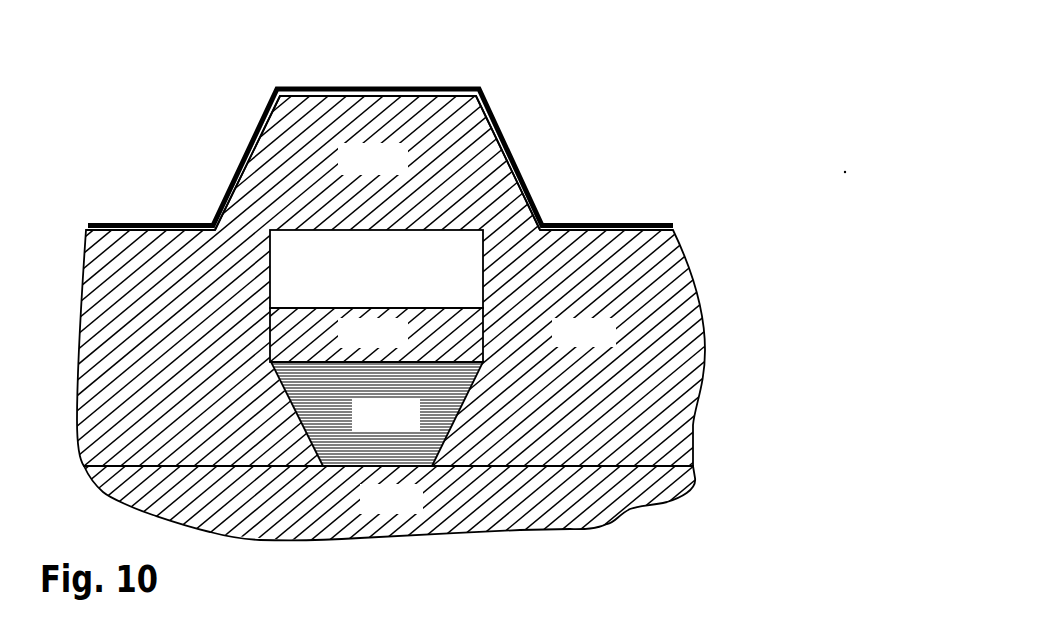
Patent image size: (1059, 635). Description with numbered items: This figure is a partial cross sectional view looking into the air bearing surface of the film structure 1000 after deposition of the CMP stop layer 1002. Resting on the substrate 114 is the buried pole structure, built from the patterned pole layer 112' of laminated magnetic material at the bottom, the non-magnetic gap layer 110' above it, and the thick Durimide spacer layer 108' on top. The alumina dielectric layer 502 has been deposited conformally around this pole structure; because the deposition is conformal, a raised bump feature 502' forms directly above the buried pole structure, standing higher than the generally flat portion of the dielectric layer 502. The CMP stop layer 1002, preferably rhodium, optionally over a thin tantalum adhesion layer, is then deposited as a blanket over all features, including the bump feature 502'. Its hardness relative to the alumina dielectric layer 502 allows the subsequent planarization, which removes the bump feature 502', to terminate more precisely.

The film structure 1000 is at (558, 112).
The CMP stop layer 1002 is at (615, 220).
The dielectric layer 502 is at (391, 281).
The bump feature 502' is at (377, 163).
The spacer layer 108' is at (376, 269).
The gap layer 110' is at (376, 335).
The pole layer 112' is at (377, 414).
The substrate 114 is at (418, 511).